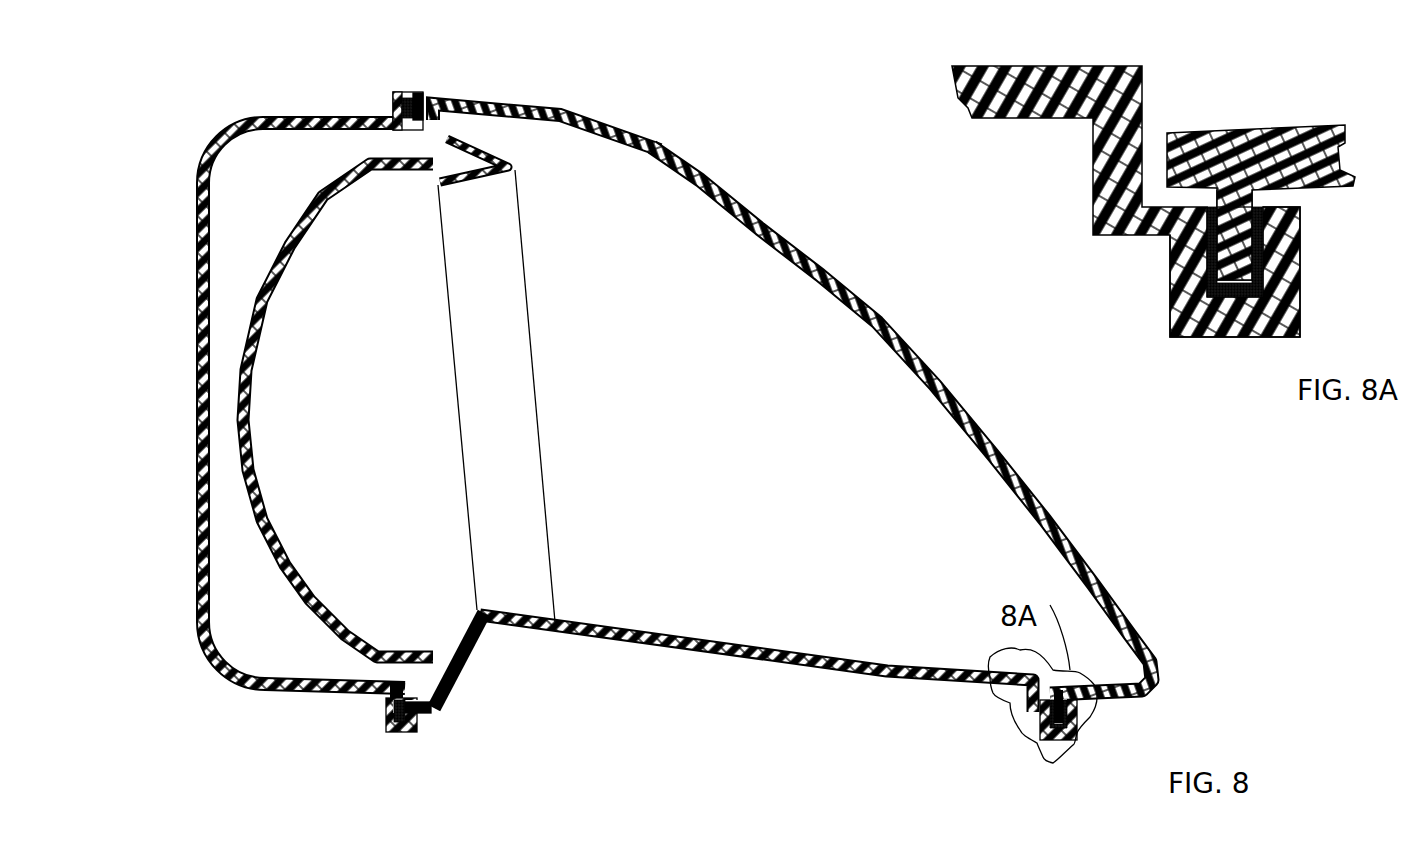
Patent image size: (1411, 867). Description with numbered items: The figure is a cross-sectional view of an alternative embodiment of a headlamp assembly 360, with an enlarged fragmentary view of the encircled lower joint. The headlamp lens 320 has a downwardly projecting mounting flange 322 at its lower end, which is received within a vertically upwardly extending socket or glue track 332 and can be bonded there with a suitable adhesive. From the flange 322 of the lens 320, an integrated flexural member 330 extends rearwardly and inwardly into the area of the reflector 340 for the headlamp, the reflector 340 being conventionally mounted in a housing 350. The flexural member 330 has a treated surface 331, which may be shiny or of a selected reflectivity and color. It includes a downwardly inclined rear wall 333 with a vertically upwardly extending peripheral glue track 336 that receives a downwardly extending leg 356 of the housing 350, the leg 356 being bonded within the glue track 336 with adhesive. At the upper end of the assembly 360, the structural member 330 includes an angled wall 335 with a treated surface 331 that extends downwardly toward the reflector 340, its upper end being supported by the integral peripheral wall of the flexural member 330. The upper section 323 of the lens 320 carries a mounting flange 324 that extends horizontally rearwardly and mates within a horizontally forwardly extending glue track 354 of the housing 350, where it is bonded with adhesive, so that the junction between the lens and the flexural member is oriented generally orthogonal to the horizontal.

In FIG. 8, the headlamp lens 320 is at (792, 374).
In FIG. 8A, the headlamp lens 320 is at (1261, 202).
In FIG. 8, the mounting flange 322 is at (1074, 708).
In FIG. 8A, the mounting flange 322 is at (1252, 237).
In FIG. 8, the upper section 323 is at (468, 107).
In FIG. 8, the mounting flange 324 is at (418, 97).
In FIG. 8, the integrated flexural member 330 is at (719, 456).
In FIG. 8A, the integrated flexural member 330 is at (1126, 201).
In FIG. 8, the treated surface 331 is at (463, 192).
In FIG. 8, the glue track 332 is at (1074, 731).
In FIG. 8A, the glue track 332 is at (1281, 268).
In FIG. 8, the rear wall 333 is at (466, 668).
In FIG. 8, the angled wall 335 is at (505, 162).
In FIG. 8A, the angled wall 335 is at (1197, 280).
In FIG. 8, the glue track 336 is at (416, 720).
In FIG. 8, the reflector 340 is at (313, 562).
In FIG. 8, the housing 350 is at (198, 604).
In FIG. 8, the glue track 354 is at (408, 94).
In FIG. 8, the leg 356 is at (386, 702).
In FIG. 8, the headlamp assembly 360 is at (792, 374).